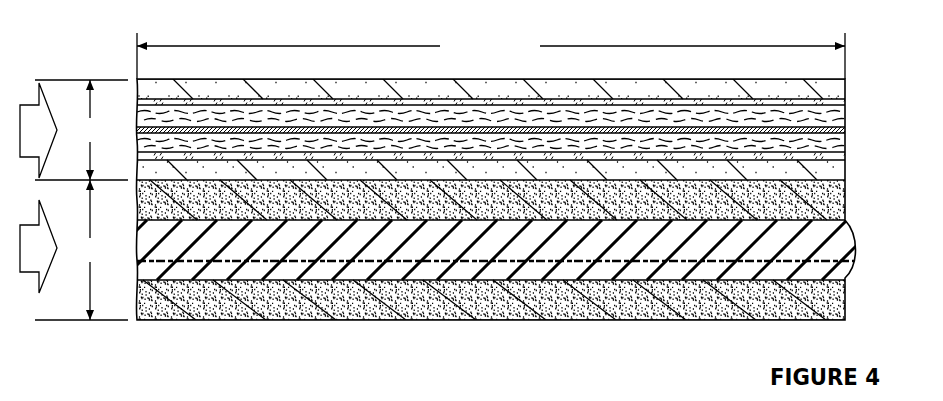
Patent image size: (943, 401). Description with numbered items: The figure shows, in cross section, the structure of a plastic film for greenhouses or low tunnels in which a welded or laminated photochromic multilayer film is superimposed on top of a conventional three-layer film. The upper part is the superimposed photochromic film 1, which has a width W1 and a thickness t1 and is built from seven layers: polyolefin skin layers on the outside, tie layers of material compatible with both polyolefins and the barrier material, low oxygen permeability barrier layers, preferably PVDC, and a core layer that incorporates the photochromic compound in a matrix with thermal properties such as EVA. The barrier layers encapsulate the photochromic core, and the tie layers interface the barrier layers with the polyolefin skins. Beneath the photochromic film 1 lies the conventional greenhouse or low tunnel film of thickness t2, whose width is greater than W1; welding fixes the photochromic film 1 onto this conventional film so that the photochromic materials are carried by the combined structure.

The superimposed photochromic film 1 is at (38, 130).
The width of photochromic film W1 is at (491, 52).
The thickness of photochromic film t1 is at (81, 130).
The thickness of conventional film t2 is at (81, 250).